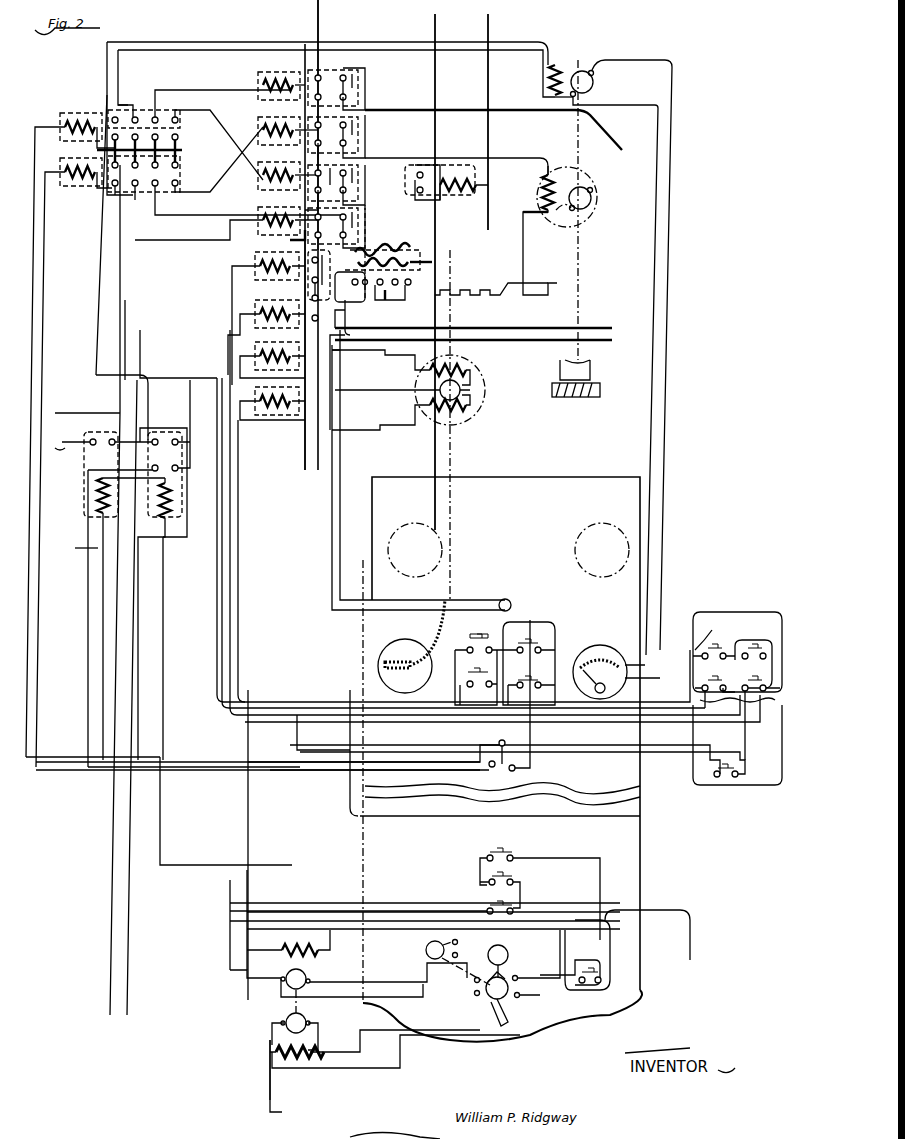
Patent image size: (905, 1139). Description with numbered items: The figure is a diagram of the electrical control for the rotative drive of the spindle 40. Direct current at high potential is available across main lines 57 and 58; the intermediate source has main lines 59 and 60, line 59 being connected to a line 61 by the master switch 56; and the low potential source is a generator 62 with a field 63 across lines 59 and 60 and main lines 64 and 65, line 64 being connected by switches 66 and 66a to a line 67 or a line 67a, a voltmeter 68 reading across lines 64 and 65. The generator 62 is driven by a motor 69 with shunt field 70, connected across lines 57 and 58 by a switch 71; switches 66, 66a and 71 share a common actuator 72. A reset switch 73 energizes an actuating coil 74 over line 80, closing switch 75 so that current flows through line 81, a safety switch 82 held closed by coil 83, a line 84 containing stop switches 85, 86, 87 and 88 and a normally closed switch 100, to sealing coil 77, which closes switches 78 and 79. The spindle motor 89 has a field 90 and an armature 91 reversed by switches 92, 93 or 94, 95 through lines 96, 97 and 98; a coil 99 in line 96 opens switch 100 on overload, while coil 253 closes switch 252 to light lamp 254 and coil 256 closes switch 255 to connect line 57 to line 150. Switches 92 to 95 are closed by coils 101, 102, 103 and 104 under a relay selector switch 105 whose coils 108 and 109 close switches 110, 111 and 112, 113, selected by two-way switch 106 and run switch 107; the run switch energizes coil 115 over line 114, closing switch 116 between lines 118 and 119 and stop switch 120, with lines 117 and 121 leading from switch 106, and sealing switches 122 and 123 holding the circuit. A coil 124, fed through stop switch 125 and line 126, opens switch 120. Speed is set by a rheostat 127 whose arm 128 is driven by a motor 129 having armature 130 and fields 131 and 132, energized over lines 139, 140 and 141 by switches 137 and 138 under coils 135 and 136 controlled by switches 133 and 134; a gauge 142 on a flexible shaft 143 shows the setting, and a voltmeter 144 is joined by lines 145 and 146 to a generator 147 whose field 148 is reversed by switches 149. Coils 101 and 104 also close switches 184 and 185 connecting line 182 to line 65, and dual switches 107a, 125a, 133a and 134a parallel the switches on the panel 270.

The spindle 40 is at (592, 372).
The master switch 56 is at (182, 490).
The main line 57 is at (436, 34).
The main line 58 is at (487, 47).
The main line 59 is at (67, 444).
The main line 60 is at (78, 413).
The line 61 is at (188, 380).
The generator 62 is at (307, 974).
The field 63 is at (286, 945).
The main line 64 is at (372, 982).
The main line 65 is at (303, 32).
The manually operable switch 66 is at (532, 972).
The manually operable switch 66a is at (449, 957).
The line 67 is at (540, 626).
The line 67a is at (768, 738).
The voltmeter 68 is at (488, 953).
The motor 69 is at (307, 1018).
The shunt field 70 is at (395, 1054).
The switch 71 is at (482, 998).
The common actuator 72 is at (520, 1022).
The reset switch 73 is at (600, 970).
The actuating coil 74 is at (98, 500).
The switch 75 is at (121, 425).
The sealing coil 77 is at (180, 505).
The switch 78 is at (180, 468).
The switch 79 is at (180, 445).
The line 80 is at (578, 915).
The line 81 is at (160, 428).
The safety switch 82 is at (412, 165).
The coil 83 is at (470, 192).
The line 84 is at (418, 828).
The stop switch 85 is at (517, 763).
The stop switch 86 is at (505, 850).
The stop switch 87 is at (510, 878).
The stop switch 88 is at (486, 906).
The motor 89 is at (600, 196).
The field 90 is at (540, 190).
The armature 91 is at (600, 213).
The switch 92 is at (365, 82).
The switch 93 is at (365, 178).
The switch 94 is at (360, 220).
The switch 95 is at (365, 128).
The line 96 is at (365, 140).
The line 97 is at (408, 108).
The line 98 is at (530, 216).
The coil 99 is at (398, 250).
The switch 100 is at (420, 268).
The actuating coil 101 is at (262, 78).
The actuating coil 102 is at (262, 176).
The actuating coil 103 is at (262, 215).
The actuating coil 104 is at (262, 124).
The relay selector switch 105 is at (182, 150).
The two-way switch 106 is at (506, 760).
The run switch 107 is at (542, 648).
The run switch 107a is at (738, 645).
The coil 108 is at (85, 113).
The coil 109 is at (74, 462).
The switch 110 is at (158, 114).
The switch 111 is at (180, 133).
The switch 112 is at (160, 190).
The switch 113 is at (180, 170).
The line 114 is at (438, 728).
The actuating coil 115 is at (252, 295).
The switch 116 is at (266, 331).
The line 117 is at (190, 772).
The line 118 is at (378, 762).
The line 119 is at (342, 275).
The stop switch 120 is at (322, 275).
The line 121 is at (190, 757).
The sealing switch 122 is at (288, 169).
The sealing switch 123 is at (305, 225).
The coil 124 is at (255, 266).
The stop switch 125 is at (540, 690).
The stop switch 125a is at (768, 682).
The line 126 is at (415, 730).
The rheostat 127 is at (480, 290).
The rheostat arm 128 is at (453, 310).
The motor 129 is at (478, 415).
The armature 130 is at (472, 405).
The series field 131 is at (445, 420).
The series field 132 is at (470, 368).
The manually operable switch 133 is at (462, 640).
The manually operable switch 133a is at (714, 640).
The manually operable switch 134 is at (466, 684).
The manually operable switch 134a is at (700, 688).
The coil 135 is at (254, 392).
The coil 136 is at (254, 348).
The switch 137 is at (271, 538).
The switch 138 is at (272, 354).
The line 139 is at (372, 428).
The line 140 is at (470, 390).
The line 141 is at (410, 358).
The gauge 142 is at (402, 640).
The flexible shaft 143 is at (450, 497).
The voltmeter 144 is at (612, 650).
The line 145 is at (653, 436).
The line 146 is at (667, 418).
The generator 147 is at (594, 80).
The exciting field 148 is at (566, 68).
The reversing switches 149 is at (128, 110).
The line 150 is at (600, 328).
The line 182 is at (318, 36).
The switch 184 is at (336, 83).
The switch 185 is at (336, 131).
The switch 252 is at (350, 287).
The coil 253 is at (372, 248).
The electric lamp 254 is at (510, 603).
The switch 255 is at (380, 320).
The coil 256 is at (381, 282).
The panel 270 is at (361, 858).